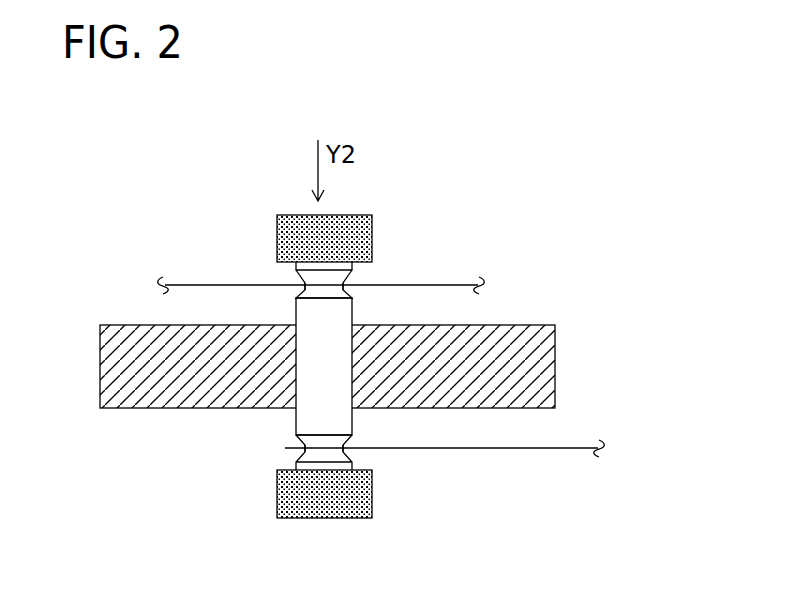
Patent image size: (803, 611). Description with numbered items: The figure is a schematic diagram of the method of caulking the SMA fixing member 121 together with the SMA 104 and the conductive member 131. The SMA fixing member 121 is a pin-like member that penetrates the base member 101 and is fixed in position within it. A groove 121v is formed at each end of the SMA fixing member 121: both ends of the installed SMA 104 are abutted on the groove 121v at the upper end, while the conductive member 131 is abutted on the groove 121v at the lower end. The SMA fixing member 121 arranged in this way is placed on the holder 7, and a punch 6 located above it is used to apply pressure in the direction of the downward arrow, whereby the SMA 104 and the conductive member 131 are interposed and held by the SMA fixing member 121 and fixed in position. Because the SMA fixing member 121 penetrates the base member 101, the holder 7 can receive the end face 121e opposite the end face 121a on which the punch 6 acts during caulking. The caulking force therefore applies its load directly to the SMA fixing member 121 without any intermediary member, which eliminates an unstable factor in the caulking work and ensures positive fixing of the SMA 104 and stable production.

The punch 6 is at (372, 228).
The holder 7 is at (372, 503).
The base member 101 is at (555, 360).
The SMA 104 is at (462, 284).
The SMA fixing member 121 is at (294, 352).
The end face 121a is at (328, 265).
The end face 121e is at (353, 468).
The groove 121v is at (293, 281).
The conductive member 131 is at (520, 449).